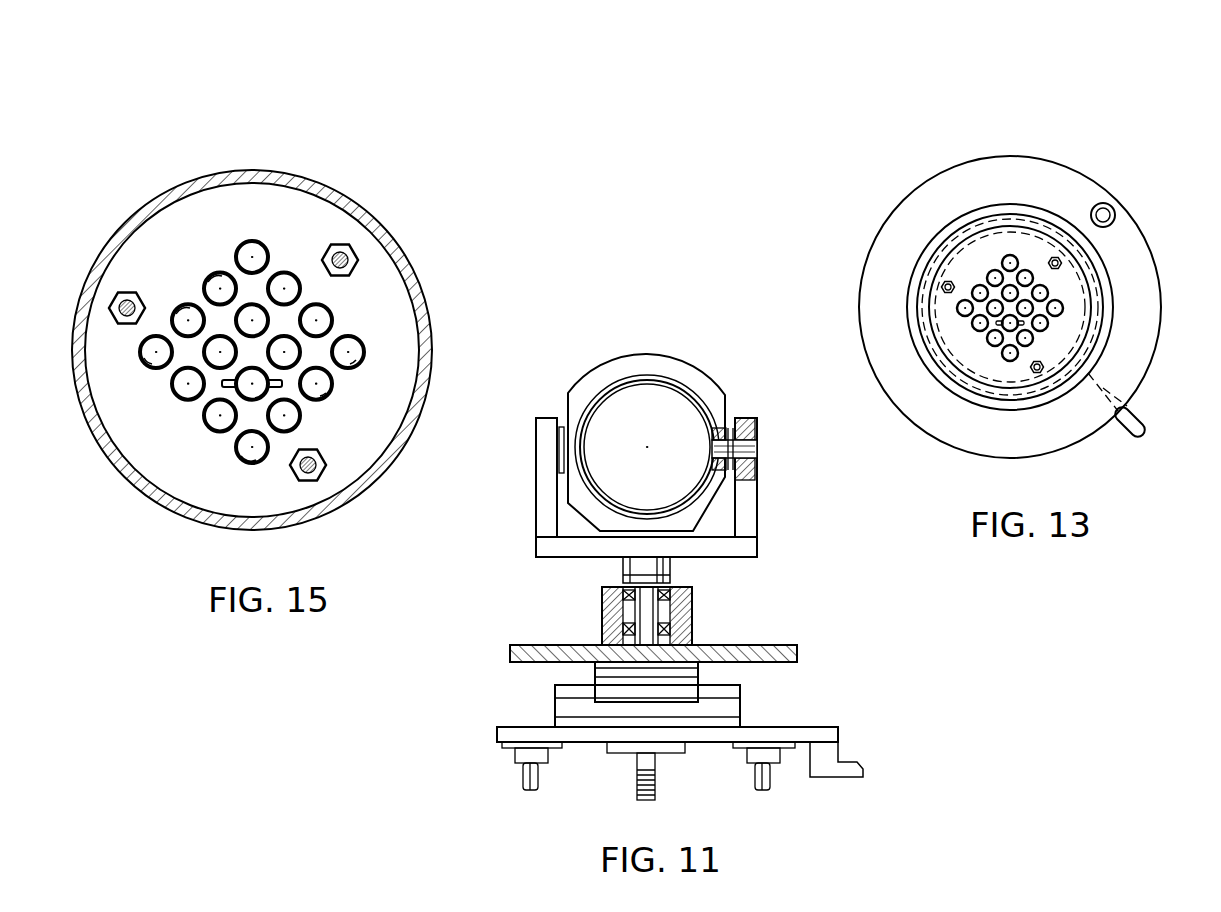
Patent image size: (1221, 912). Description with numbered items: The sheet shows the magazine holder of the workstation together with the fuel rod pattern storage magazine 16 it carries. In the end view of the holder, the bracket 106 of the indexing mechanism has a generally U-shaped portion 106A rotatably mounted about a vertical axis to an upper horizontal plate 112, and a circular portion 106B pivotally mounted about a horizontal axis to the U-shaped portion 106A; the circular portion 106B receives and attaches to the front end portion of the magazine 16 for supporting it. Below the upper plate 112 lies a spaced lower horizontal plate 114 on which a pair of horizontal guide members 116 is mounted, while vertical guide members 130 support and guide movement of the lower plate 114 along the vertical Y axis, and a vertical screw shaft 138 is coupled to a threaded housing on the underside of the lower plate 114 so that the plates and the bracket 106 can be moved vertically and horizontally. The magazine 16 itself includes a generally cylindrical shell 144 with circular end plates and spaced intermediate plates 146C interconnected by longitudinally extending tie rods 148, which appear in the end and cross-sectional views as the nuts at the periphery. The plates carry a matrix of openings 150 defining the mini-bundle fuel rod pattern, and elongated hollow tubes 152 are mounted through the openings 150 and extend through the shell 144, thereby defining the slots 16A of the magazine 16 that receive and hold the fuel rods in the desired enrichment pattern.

In FIG. 15, the fuel rod pattern storage magazine 16 is at (343, 188).
In FIG. 13, the fuel rod pattern storage magazine 16 is at (1048, 151).
In FIG. 15, the slots 16A is at (190, 302).
In FIG. 13, the slots 16A is at (983, 292).
In FIG. 11, the bracket 106 is at (772, 479).
In FIG. 11, the U-shaped portion 106A is at (748, 523).
In FIG. 11, the circular portion 106B is at (690, 372).
In FIG. 11, the upper horizontal plate 112 is at (772, 645).
In FIG. 11, the lower horizontal plate 114 is at (797, 727).
In FIG. 11, the horizontal guide members 116 is at (710, 675).
In FIG. 11, the vertical guide members 130 is at (513, 779).
In FIG. 11, the vertical screw shaft 138 is at (635, 785).
In FIG. 15, the cylindrical shell 144 is at (412, 280).
In FIG. 13, the cylindrical shell 144 is at (970, 222).
In FIG. 15, the intermediate plates 146C is at (213, 220).
In FIG. 15, the tie rods 148 is at (345, 247).
In FIG. 13, the tie rods 148 is at (1058, 257).
In FIG. 15, the openings 150 is at (262, 240).
In FIG. 15, the hollow tubes 152 is at (363, 335).